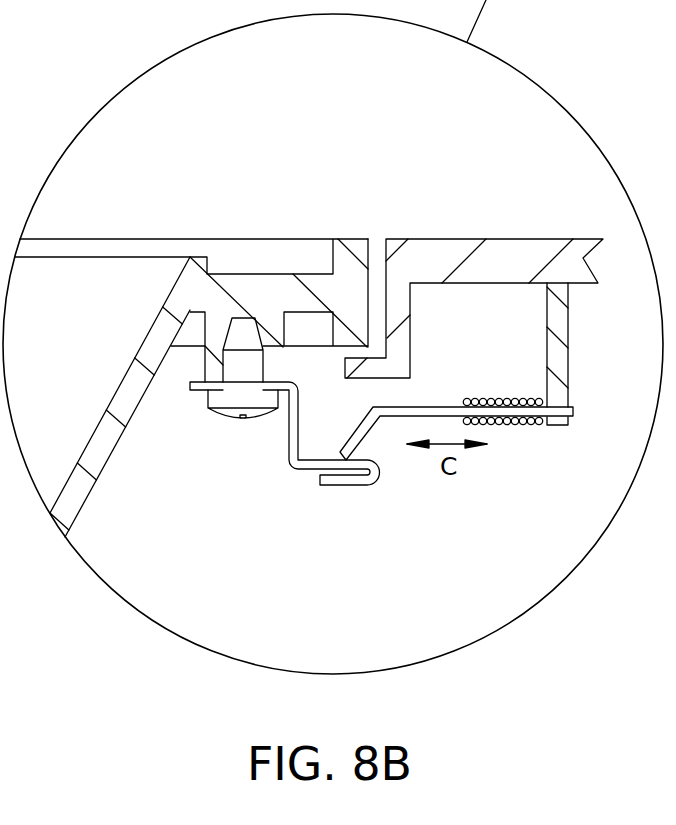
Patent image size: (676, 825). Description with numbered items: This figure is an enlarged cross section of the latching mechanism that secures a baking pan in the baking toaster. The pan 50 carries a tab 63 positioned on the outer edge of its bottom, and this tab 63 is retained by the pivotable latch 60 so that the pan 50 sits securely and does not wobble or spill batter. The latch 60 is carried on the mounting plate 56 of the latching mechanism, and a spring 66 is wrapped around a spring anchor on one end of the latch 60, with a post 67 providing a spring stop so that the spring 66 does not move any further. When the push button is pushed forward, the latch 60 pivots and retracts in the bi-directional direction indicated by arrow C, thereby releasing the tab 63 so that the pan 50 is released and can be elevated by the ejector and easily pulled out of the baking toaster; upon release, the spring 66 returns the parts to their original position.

The pan 50 is at (195, 238).
The mounting plate 56 is at (412, 239).
The post 67 is at (568, 367).
The spring 66 is at (517, 425).
The pivotable latch 60 is at (360, 438).
The tab 63 is at (337, 486).